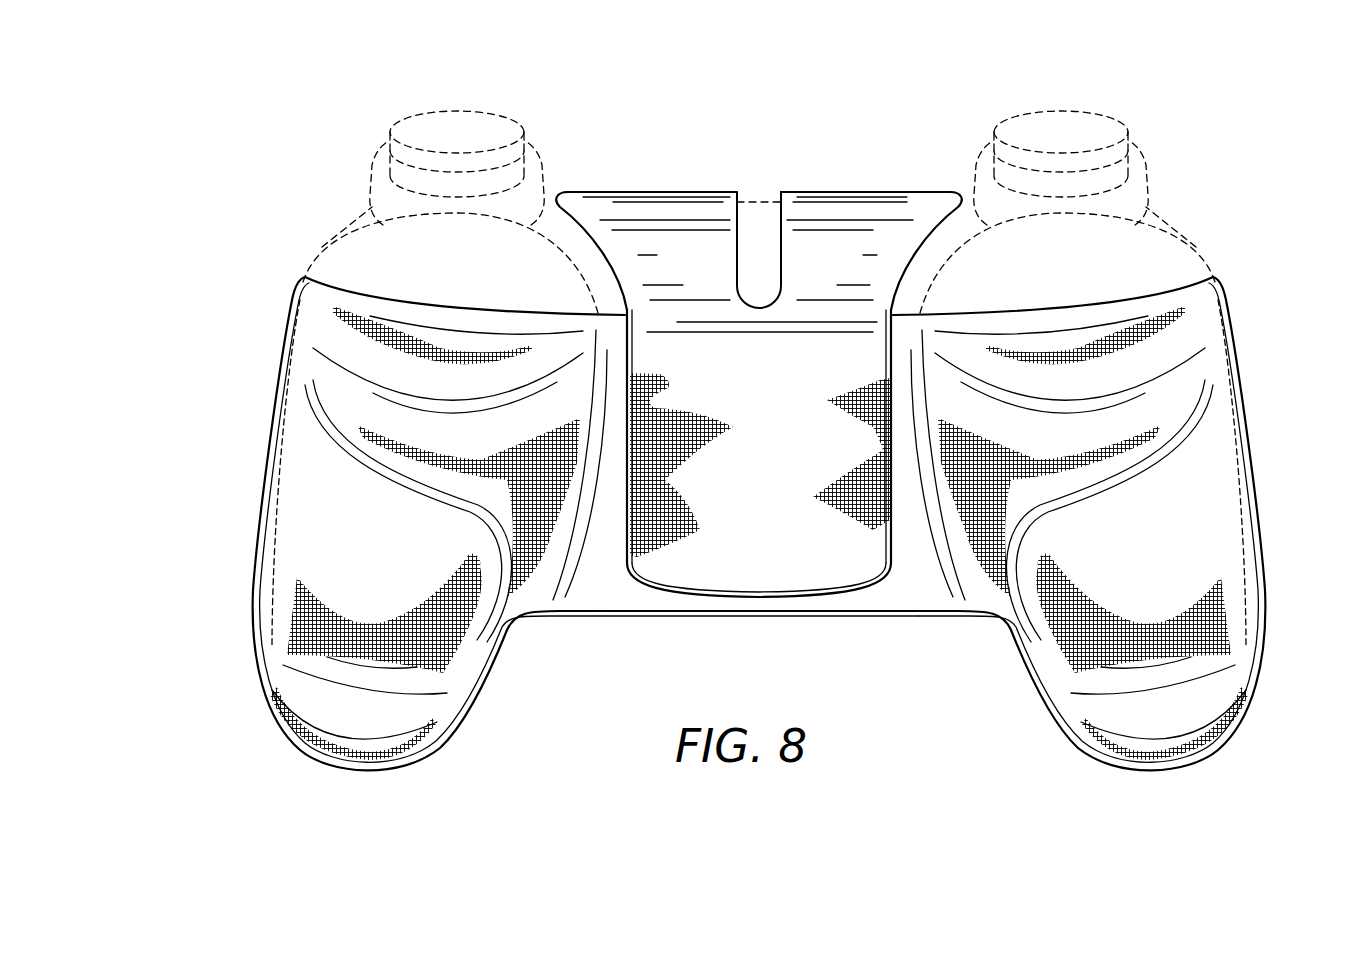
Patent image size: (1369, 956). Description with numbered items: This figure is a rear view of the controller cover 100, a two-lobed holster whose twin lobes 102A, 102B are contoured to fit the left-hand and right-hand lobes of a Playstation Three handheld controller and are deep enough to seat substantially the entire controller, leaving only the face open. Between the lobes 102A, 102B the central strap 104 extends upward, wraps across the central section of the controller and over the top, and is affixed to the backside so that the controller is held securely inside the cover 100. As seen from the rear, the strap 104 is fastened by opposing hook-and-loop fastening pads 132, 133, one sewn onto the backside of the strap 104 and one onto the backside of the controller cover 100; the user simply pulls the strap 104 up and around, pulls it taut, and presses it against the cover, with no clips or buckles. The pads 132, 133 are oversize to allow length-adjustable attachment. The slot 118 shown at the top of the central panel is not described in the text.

The controller cover 100 is at (1287, 285).
The lobe 102A is at (1263, 582).
The lobe 102B is at (255, 573).
The central strap 104 is at (812, 218).
The slot / notch 118 is at (738, 218).
The hook-and-loop fastening pad 132 is at (722, 598).
The hook-and-loop fastening pad 133 is at (740, 647).